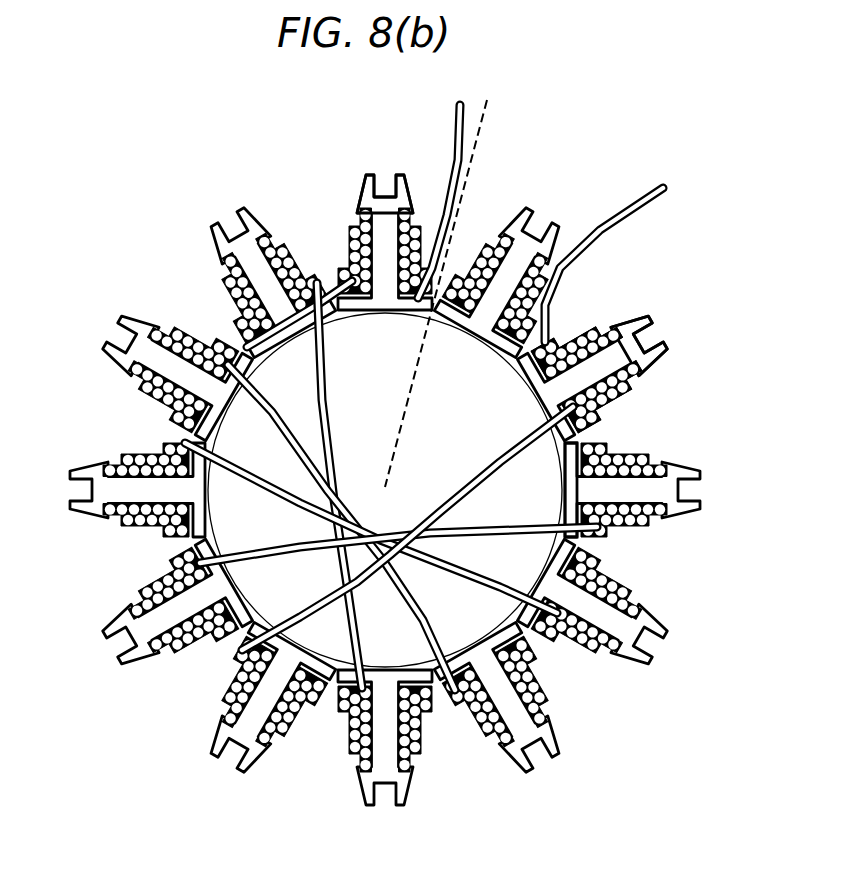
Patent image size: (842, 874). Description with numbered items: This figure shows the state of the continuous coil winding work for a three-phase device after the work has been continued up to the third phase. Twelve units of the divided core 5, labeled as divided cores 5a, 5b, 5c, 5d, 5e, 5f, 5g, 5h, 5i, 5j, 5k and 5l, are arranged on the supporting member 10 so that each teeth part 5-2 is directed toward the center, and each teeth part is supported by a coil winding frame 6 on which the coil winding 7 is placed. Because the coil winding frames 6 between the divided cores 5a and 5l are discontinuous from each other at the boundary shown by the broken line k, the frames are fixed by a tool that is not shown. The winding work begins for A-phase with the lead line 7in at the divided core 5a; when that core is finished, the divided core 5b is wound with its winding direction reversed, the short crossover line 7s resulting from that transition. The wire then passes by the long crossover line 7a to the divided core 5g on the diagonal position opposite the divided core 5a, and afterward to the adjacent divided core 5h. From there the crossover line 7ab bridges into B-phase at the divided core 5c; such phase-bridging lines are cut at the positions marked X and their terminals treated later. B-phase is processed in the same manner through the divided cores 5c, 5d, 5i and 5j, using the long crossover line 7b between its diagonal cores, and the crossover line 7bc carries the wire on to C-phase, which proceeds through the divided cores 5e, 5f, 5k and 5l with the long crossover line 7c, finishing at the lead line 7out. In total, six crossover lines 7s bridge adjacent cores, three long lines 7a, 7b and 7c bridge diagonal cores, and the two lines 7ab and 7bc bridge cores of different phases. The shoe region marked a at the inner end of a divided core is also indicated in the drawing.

The divided core 5 is at (612, 366).
The divided core 5a is at (385, 242).
The divided core 5b is at (261, 276).
The divided core 5c is at (171, 366).
The divided core 5d is at (137, 490).
The divided core 5e is at (171, 613).
The divided core 5f is at (261, 704).
The divided core 5g is at (385, 737).
The divided core 5h is at (508, 704).
The divided core 5i is at (599, 613).
The divided core 5j is at (632, 490).
The divided core 5k is at (599, 366).
The divided core 5l is at (508, 276).
The teeth part 5-2 is at (360, 194).
The coil winding frame 6 is at (654, 341).
The coil winding 7 is at (591, 359).
The crossover line 7a is at (346, 485).
The crossover line 7ab is at (341, 527).
The crossover line 7b is at (371, 528).
The crossover line 7bc is at (398, 528).
The crossover line 7c is at (407, 528).
The crossover line 7s is at (299, 334).
The lead line 7in is at (436, 194).
The lead line 7out is at (628, 265).
The supporting member 10 is at (385, 490).
The pole shoe inner end a is at (594, 477).
The broken line k is at (454, 293).